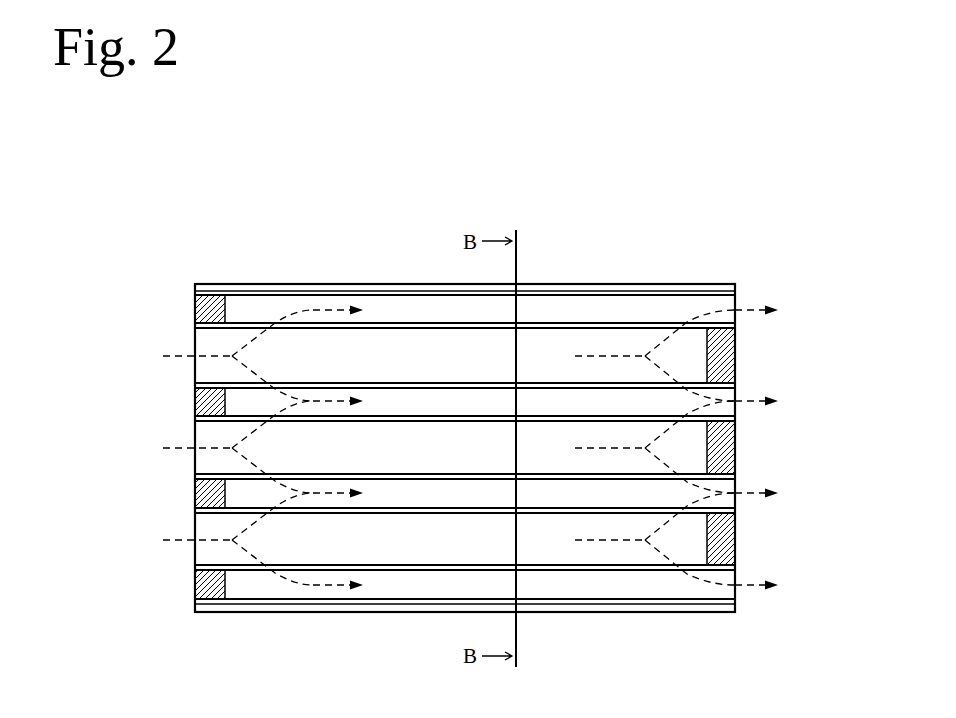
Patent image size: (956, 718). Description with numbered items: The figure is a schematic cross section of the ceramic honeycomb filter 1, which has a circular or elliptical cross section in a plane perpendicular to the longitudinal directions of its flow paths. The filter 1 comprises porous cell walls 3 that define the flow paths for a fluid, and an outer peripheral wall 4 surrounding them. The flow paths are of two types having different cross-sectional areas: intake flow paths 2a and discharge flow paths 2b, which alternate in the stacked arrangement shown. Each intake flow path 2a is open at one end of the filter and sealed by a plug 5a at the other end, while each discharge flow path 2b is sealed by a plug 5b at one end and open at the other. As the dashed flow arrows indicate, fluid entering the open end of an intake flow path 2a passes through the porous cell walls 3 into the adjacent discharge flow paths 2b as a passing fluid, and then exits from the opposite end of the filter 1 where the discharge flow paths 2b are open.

The ceramic honeycomb filter 1 is at (253, 278).
The intake flow paths 2a is at (582, 342).
The discharge flow paths 2b is at (677, 310).
The porous cell walls 3 is at (327, 328).
The outer peripheral wall 4 is at (648, 608).
The plugs 5a is at (727, 349).
The plugs 5b is at (200, 402).